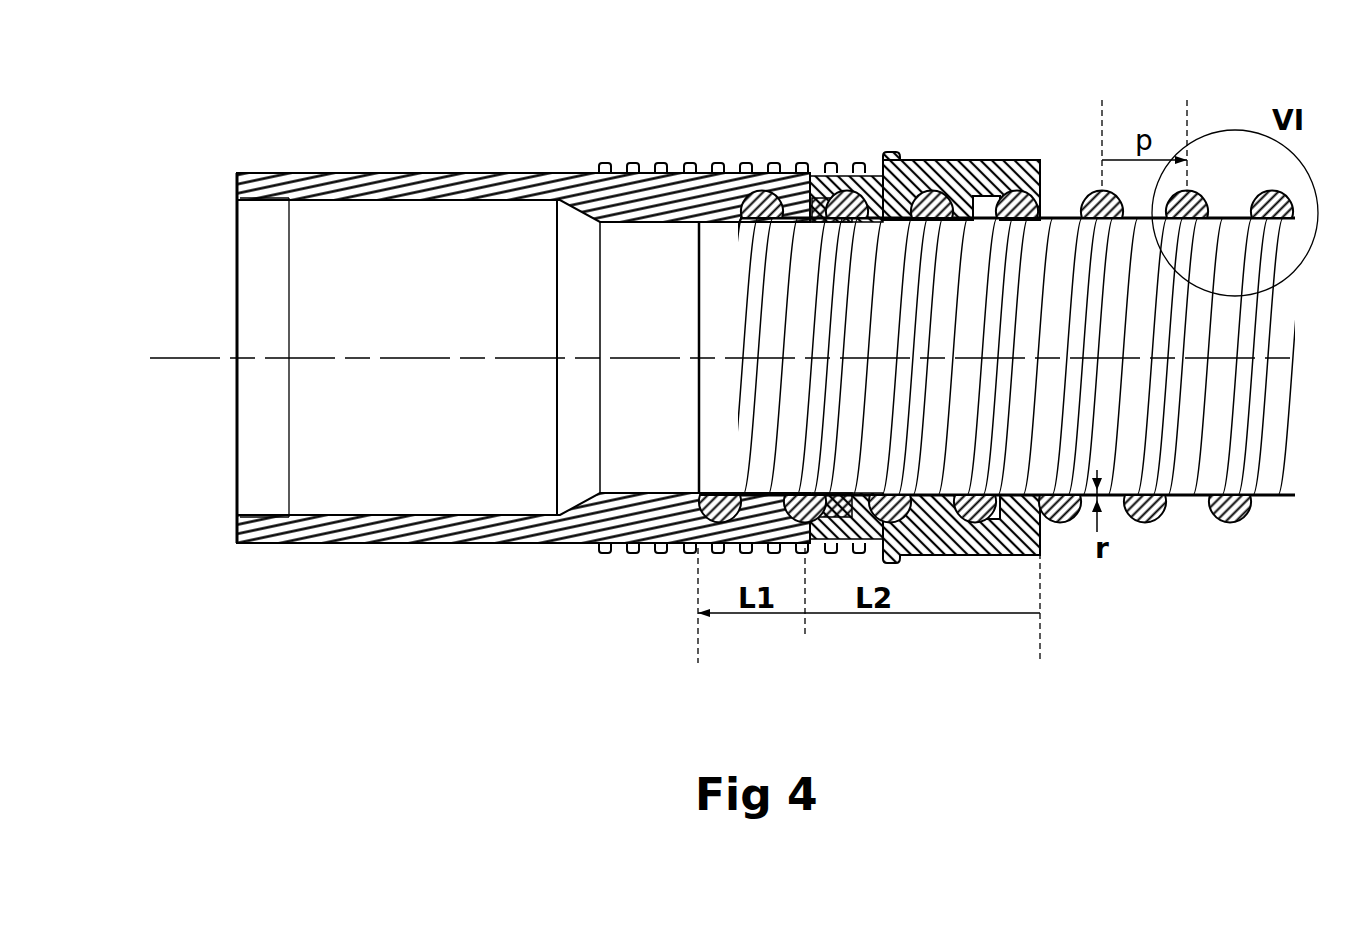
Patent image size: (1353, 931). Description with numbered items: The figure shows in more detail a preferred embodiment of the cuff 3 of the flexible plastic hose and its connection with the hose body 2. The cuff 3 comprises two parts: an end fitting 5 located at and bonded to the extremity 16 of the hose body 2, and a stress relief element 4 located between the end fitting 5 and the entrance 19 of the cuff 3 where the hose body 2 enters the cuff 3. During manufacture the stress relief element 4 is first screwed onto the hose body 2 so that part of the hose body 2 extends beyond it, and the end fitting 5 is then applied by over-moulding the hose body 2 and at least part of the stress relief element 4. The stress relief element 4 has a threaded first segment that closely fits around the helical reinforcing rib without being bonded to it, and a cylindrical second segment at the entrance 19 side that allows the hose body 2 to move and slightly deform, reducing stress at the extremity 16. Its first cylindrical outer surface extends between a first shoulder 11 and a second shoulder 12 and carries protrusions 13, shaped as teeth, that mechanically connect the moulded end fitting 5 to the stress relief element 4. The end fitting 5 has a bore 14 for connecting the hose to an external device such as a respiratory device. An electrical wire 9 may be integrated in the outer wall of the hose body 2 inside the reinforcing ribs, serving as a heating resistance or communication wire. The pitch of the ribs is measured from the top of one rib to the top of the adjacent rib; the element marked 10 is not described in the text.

The hose body 2 is at (1187, 592).
The cuff 3 is at (520, 615).
The stress relief element 4 is at (955, 555).
The end fitting 5 is at (568, 525).
The electrical wire 9 is at (1227, 520).
The nut end face 10 is at (1042, 552).
The first shoulder 11 is at (810, 175).
The second shoulder 12 is at (885, 158).
The protrusions 13 is at (835, 173).
The bore 14 is at (343, 517).
The extremity 16 is at (696, 340).
The entrance 19 is at (1057, 170).